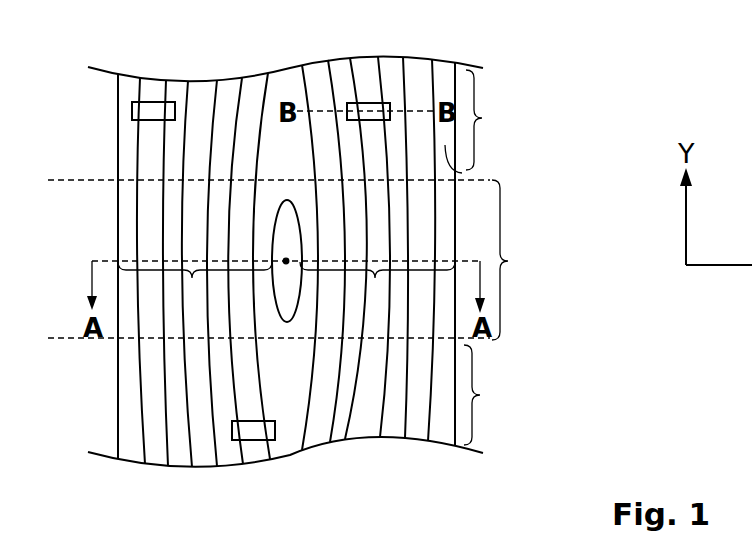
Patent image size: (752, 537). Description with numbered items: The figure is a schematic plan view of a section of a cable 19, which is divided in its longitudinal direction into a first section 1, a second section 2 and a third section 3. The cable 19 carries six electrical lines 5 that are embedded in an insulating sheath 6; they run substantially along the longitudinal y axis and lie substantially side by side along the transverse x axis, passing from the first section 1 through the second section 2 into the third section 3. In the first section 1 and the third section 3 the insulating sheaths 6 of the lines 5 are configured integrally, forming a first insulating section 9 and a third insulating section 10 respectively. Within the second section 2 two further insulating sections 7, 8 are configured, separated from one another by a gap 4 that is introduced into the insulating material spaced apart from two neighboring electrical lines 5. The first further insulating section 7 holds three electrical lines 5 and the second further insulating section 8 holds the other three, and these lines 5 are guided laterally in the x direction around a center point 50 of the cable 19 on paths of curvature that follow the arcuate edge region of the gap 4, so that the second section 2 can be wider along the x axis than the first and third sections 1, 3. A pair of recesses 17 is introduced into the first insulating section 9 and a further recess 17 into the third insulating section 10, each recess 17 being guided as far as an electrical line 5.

The first section 1 is at (482, 120).
The second section 2 is at (512, 260).
The third section 3 is at (481, 395).
The gap 4 is at (285, 207).
The electrical lines 5 is at (153, 88).
The insulating sheath 6 is at (122, 86).
The first further insulating section 7 is at (195, 286).
The second further insulating section 8 is at (377, 286).
The first insulating section 9 is at (462, 173).
The third insulating section 10 is at (438, 428).
The recess 17 is at (132, 108).
The cable 19 is at (88, 414).
The center point 50 is at (284, 261).